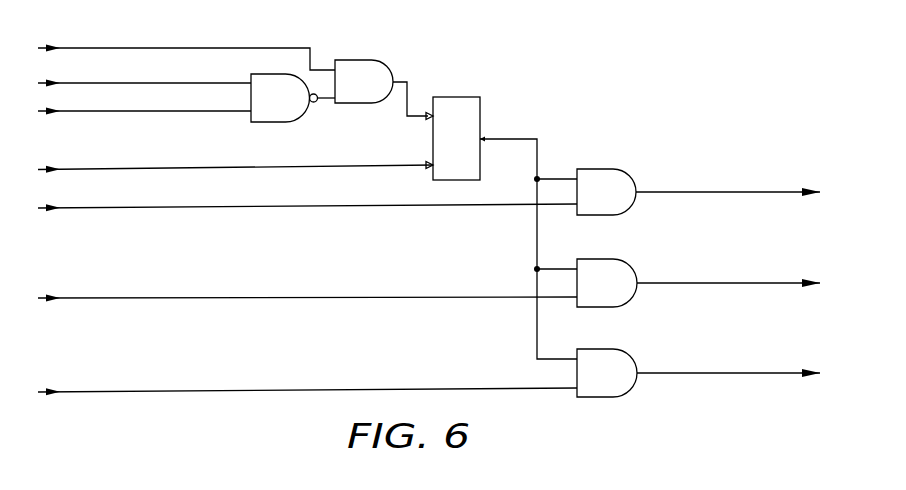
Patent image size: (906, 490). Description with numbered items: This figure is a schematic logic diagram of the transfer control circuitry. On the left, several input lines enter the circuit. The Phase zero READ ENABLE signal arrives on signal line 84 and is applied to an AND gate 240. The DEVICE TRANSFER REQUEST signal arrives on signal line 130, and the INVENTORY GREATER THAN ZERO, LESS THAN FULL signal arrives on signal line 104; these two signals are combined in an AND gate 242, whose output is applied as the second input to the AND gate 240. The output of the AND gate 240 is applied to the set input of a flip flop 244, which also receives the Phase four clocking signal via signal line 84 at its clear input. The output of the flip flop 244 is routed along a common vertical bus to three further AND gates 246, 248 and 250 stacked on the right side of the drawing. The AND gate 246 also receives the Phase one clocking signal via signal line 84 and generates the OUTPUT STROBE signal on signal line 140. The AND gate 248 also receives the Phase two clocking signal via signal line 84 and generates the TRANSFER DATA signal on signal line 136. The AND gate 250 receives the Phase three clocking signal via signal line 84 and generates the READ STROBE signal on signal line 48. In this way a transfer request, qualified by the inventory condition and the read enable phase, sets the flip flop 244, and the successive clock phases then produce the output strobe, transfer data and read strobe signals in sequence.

The signal line 84 is at (258, 46).
The signal line 130 is at (230, 80).
The signal line 104 is at (233, 113).
The AND gate 240 is at (375, 68).
The AND gate 242 is at (295, 101).
The flip flop 244 is at (475, 112).
The AND gate 246 is at (605, 185).
The AND gate 248 is at (616, 278).
The AND gate 250 is at (618, 366).
The signal line 140 is at (778, 188).
The signal line 136 is at (782, 280).
The signal line 48 is at (766, 371).